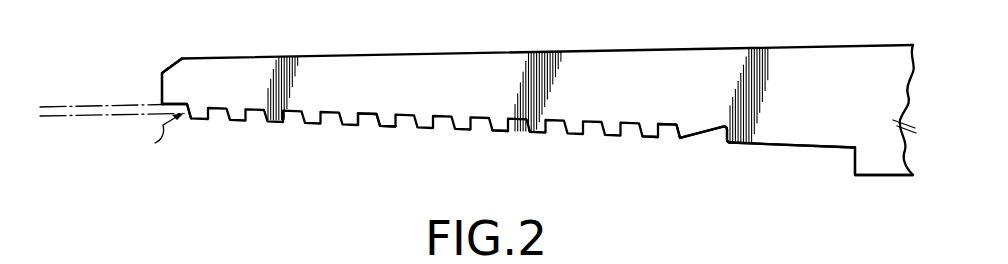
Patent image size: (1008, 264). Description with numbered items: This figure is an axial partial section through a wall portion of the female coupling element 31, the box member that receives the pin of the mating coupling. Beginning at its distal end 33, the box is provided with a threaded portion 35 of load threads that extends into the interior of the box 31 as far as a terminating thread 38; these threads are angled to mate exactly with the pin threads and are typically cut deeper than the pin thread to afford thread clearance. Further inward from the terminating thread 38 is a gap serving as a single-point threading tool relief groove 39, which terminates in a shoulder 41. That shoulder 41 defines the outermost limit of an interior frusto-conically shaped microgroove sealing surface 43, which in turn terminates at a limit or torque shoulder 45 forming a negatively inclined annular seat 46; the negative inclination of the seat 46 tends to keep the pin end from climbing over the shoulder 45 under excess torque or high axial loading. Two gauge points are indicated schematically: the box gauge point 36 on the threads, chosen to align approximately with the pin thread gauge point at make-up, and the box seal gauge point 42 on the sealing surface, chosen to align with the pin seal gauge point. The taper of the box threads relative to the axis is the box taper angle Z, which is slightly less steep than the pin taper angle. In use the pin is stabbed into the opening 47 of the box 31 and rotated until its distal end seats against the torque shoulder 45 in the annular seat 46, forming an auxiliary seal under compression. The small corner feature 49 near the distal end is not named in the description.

The female coupling element 31 is at (489, 95).
The distal end 33 is at (162, 79).
The threaded portion 35 is at (384, 127).
The box gauge point 36 is at (500, 141).
The terminating thread 38 is at (642, 138).
The single-point threading tool relief groove 39 is at (691, 126).
The shoulder 41 is at (727, 142).
The box seal gauge point 42 is at (748, 157).
The microgroove sealing surface 43 is at (772, 147).
The torque shoulder 45 is at (887, 176).
The annular seat 46 is at (855, 149).
The opening 47 is at (153, 130).
The corner 49 is at (163, 105).
The box taper angle Z is at (91, 110).